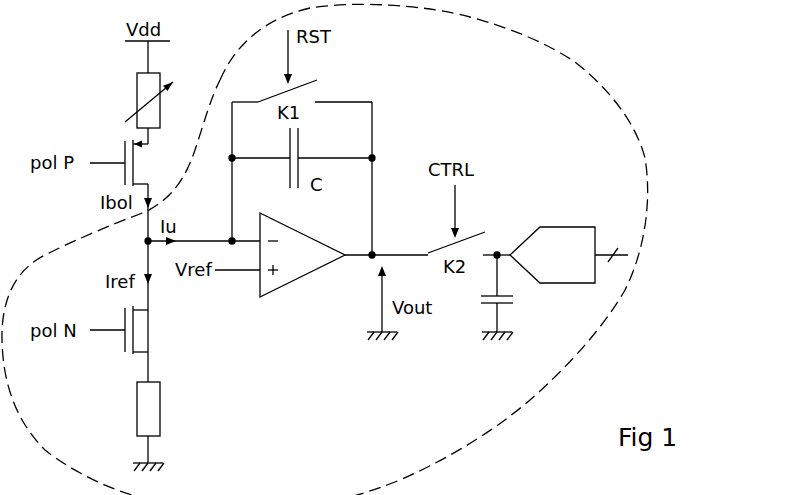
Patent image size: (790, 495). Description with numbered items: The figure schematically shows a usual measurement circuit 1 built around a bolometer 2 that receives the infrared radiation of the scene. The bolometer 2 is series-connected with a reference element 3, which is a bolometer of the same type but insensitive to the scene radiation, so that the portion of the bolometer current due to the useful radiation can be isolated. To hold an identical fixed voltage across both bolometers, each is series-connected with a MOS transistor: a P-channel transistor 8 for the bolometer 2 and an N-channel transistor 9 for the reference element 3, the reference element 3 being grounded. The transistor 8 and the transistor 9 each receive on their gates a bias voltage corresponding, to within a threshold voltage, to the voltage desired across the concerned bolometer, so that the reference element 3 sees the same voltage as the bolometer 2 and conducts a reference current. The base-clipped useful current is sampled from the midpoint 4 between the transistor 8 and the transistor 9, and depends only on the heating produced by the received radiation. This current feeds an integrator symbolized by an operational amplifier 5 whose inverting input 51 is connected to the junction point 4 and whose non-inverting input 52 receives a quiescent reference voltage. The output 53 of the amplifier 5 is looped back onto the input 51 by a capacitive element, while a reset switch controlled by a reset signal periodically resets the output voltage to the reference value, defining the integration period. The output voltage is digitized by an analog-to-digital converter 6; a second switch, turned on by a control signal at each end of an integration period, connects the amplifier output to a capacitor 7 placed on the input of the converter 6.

The measurement circuit 1 is at (560, 50).
The bolometer 2 is at (186, 71).
The reference element 3 is at (177, 408).
The midpoint 4 is at (148, 242).
The operational amplifier 5 is at (298, 282).
The input 51 is at (232, 241).
The input 52 is at (230, 273).
The output 53 is at (381, 253).
The analog-to-digital converter 6 is at (565, 283).
The capacitor 7 is at (489, 305).
The MOS transistor 8 is at (140, 158).
The MOS transistor 9 is at (148, 332).